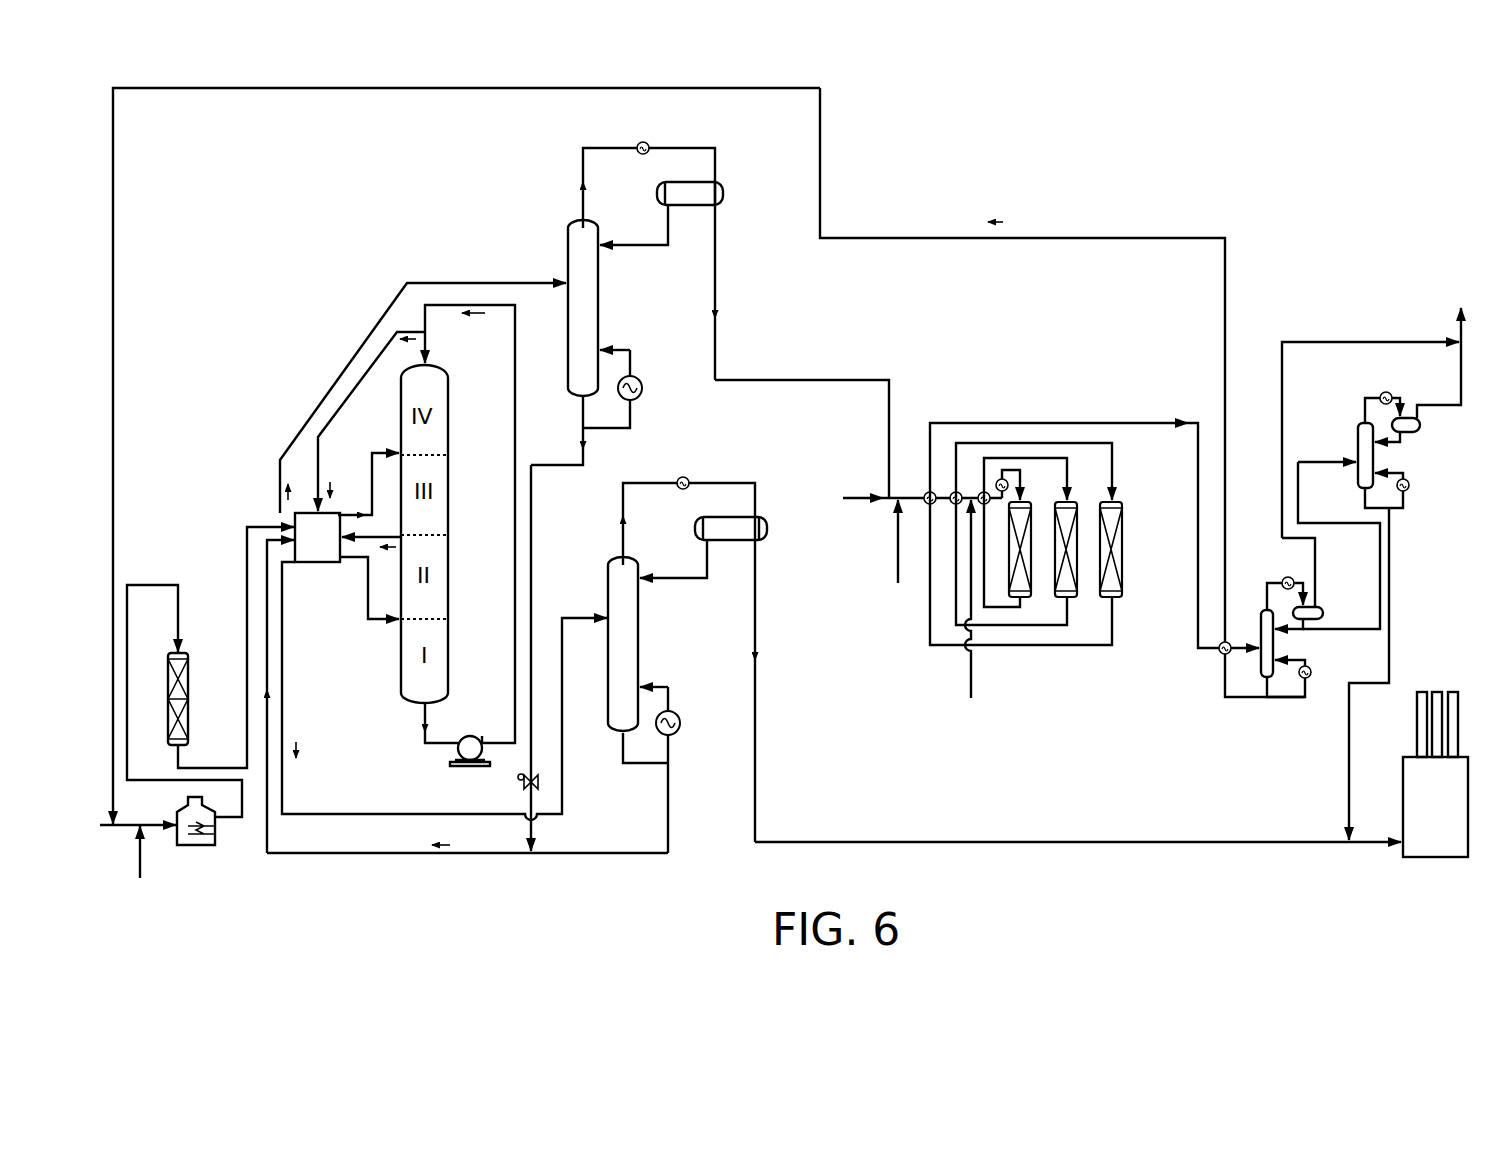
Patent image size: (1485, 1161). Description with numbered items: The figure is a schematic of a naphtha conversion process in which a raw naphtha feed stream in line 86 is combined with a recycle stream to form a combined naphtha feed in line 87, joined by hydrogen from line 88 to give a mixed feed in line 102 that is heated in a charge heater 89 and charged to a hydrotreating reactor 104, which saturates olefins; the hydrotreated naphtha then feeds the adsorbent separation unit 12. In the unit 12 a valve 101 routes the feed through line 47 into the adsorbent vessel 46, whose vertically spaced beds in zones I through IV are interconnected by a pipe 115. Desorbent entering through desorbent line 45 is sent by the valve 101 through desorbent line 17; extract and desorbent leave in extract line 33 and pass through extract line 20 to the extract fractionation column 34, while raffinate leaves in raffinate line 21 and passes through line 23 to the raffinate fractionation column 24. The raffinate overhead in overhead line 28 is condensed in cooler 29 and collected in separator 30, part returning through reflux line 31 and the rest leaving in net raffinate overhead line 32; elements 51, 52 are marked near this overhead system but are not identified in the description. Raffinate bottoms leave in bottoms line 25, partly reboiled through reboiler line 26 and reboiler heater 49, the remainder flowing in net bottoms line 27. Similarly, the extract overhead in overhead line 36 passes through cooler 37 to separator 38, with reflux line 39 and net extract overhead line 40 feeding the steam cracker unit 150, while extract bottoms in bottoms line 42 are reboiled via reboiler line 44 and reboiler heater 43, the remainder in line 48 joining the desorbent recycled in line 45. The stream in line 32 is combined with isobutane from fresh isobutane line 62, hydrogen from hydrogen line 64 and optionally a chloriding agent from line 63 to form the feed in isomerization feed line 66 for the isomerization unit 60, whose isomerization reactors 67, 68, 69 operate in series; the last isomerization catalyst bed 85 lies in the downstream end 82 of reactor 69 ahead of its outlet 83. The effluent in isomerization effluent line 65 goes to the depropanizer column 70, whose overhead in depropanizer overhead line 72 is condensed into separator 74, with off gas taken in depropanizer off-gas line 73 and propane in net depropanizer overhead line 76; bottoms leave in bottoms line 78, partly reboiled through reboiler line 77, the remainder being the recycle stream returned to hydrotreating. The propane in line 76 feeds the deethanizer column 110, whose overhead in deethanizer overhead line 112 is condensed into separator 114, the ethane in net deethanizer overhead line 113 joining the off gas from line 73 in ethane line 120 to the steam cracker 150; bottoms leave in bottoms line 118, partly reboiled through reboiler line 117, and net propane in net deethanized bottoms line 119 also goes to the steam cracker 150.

The adsorbent separation unit 12 is at (364, 202).
The desorbent line 17 is at (370, 455).
The extract line 20 is at (283, 685).
The raffinate line 21 is at (344, 403).
The line 23 is at (492, 281).
The raffinate fractionation column 24 is at (568, 340).
The bottoms line 25 is at (583, 408).
The reboiler line 26 is at (628, 348).
The net bottoms line 27 is at (531, 557).
The overhead line 28 is at (583, 188).
The cooler 29 is at (640, 142).
The separator 30 is at (657, 194).
The reflux line 31 is at (625, 248).
The net raffinate overhead line 32 is at (715, 268).
The extract line 33 is at (378, 530).
The extract fractionation column 34 is at (608, 657).
The overhead line 36 is at (623, 522).
The cooler 37 is at (679, 478).
The separator 38 is at (694, 528).
The reflux line 39 is at (665, 580).
The net extract overhead line 40 is at (755, 619).
The bottoms line 42 is at (620, 740).
The reboiler heater 43 is at (681, 716).
The reboiler line 44 is at (663, 684).
The desorbent line 45 is at (346, 853).
The adsorbent vessel 46 is at (452, 404).
The line 47 is at (367, 622).
The line 48 is at (669, 818).
The reboiler heater 49 is at (640, 378).
The stream 51 is at (749, 229).
The stream 52 is at (777, 184).
The isomerization unit 60 is at (1056, 382).
The fresh isobutane line 62 is at (858, 494).
The line 63 is at (970, 665).
The hydrogen line 64 is at (898, 572).
The isomerization effluent line 65 is at (1020, 423).
The isomerization feed line 66 is at (912, 496).
The first isomerization reactor 67 is at (1009, 598).
The second isomerization reactor 68 is at (1055, 568).
The third isomerization reactor 69 is at (1122, 525).
The depropanizer column 70 is at (1263, 609).
The depropanizer overhead line 72 is at (1299, 578).
The depropanizer off-gas line 73 is at (1316, 558).
The separator 74 is at (1324, 614).
The net depropanizer overhead line 76 is at (1325, 460).
The reboiler line 77 is at (1298, 699).
The bottoms line 78 is at (1266, 690).
The downstream end 82 is at (1120, 610).
The outlet 83 is at (1108, 600).
The last isomerization catalyst bed 85 is at (1116, 516).
The raw naphtha feed line 86 is at (105, 829).
The line 87 is at (140, 825).
The hydrogen line 88 is at (141, 880).
The charge heater 89 is at (216, 841).
The valve 101 is at (318, 567).
The line 102 is at (150, 830).
The hydrotreating reactor 104 is at (189, 698).
The deethanizer column 110 is at (1361, 422).
The deethanizer overhead line 112 is at (1393, 392).
The net deethanizer overhead line 113 is at (420, 742).
The separator 114 is at (462, 773).
The pipe 115 is at (514, 570).
The reboiler line 117 is at (1392, 512).
The bottoms line 118 is at (1364, 505).
The net deethanized bottoms line 119 is at (1389, 650).
The ethane line 120 is at (1460, 330).
The steam cracker unit 150 is at (1413, 860).